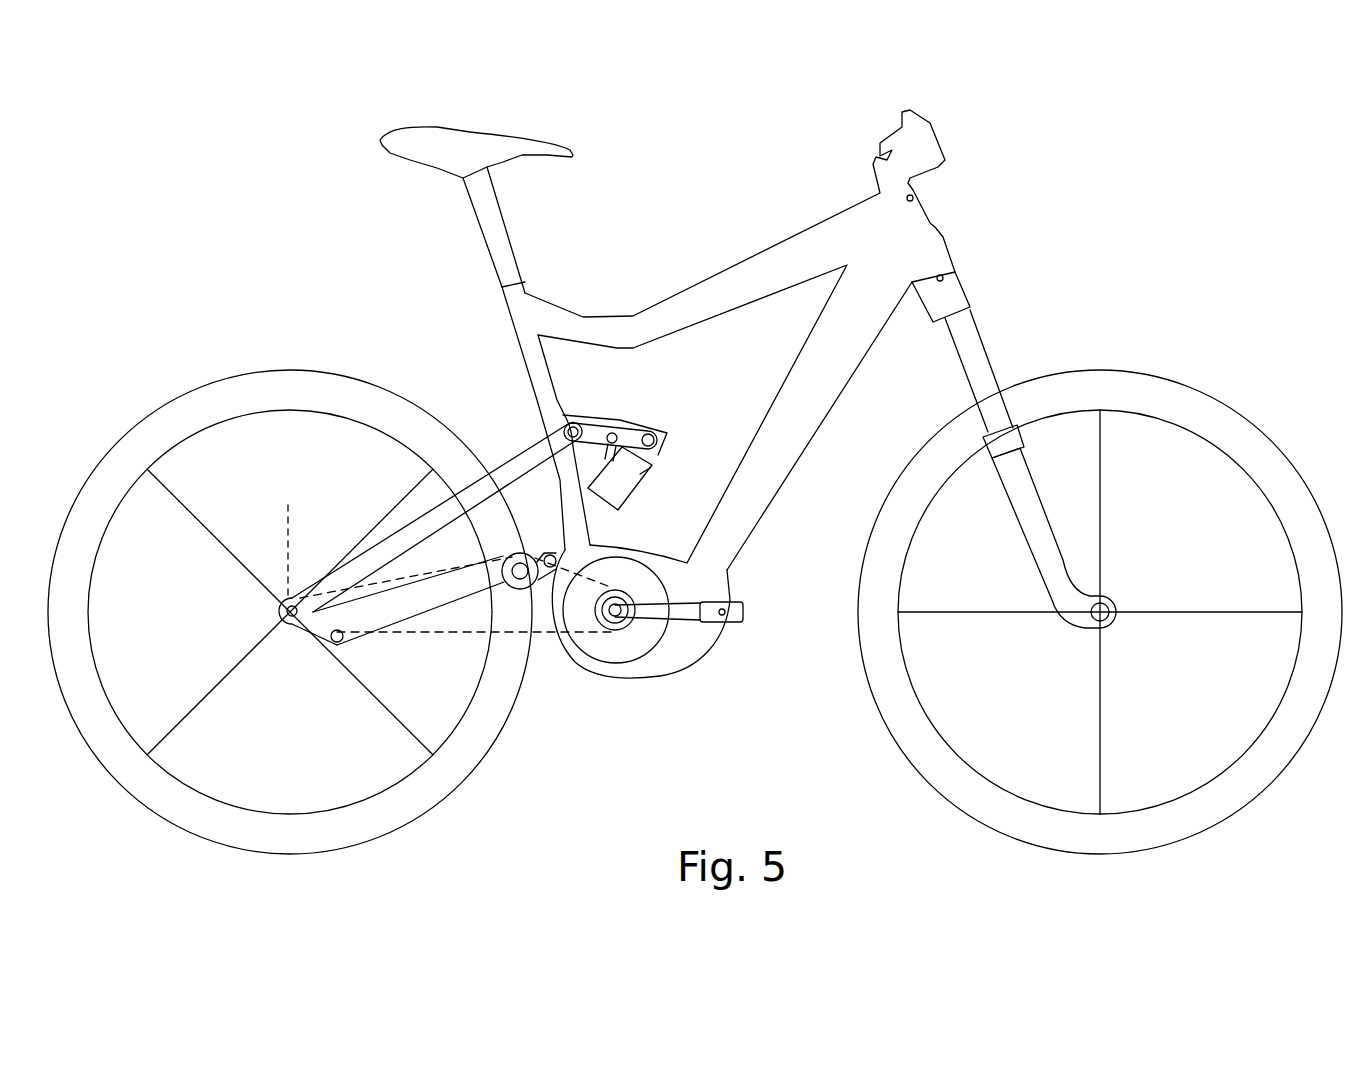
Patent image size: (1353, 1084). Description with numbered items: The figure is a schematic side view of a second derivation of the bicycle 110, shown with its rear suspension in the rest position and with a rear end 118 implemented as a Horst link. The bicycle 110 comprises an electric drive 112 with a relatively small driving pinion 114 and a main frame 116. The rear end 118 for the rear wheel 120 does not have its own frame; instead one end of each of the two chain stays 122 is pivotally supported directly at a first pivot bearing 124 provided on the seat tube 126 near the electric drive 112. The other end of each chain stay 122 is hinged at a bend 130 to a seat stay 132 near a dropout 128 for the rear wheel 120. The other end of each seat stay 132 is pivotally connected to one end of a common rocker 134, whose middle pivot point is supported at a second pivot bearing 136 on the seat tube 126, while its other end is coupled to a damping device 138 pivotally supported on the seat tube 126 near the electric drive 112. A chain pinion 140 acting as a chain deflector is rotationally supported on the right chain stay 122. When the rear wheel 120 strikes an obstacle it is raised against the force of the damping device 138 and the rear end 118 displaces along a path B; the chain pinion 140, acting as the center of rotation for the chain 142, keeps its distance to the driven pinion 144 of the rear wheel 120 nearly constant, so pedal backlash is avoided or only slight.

The bicycle 110 is at (1162, 243).
The electric drive 112 is at (697, 650).
The driving pinion 114 is at (623, 636).
The main frame 116 is at (722, 253).
The rear end 118 is at (359, 463).
The rear wheel 120 is at (193, 407).
The chain stay 122 is at (414, 605).
The first pivot bearing 124 is at (552, 554).
The seat tube 126 is at (518, 338).
The dropout 128 is at (279, 604).
The bend 130 is at (325, 641).
The seat stay 132 is at (480, 488).
The rocker 134 is at (640, 434).
The second pivot bearing 136 is at (612, 433).
The damping device 138 is at (655, 472).
The chain pinion 140 is at (523, 592).
The chain 142 is at (357, 578).
The driven pinion 144 is at (275, 621).
The path B is at (285, 546).